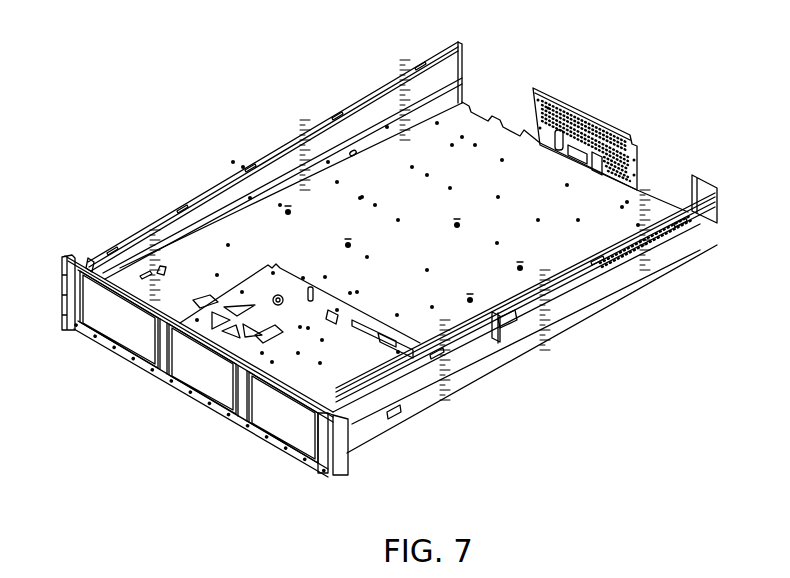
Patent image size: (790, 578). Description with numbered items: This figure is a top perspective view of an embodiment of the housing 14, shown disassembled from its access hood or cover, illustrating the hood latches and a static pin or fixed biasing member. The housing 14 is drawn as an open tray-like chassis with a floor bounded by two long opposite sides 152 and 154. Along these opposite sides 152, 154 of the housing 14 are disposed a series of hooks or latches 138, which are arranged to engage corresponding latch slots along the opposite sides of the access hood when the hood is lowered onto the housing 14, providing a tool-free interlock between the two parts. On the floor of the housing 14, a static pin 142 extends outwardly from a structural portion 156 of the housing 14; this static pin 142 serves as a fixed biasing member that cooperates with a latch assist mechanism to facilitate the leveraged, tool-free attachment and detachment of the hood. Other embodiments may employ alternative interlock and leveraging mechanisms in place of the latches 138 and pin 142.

The housing 14 is at (613, 95).
The hooks or latches 138 is at (112, 250).
The static pin 142 is at (317, 292).
The side of the housing 152 is at (273, 163).
The side of the housing 154 is at (563, 295).
The structural portion of the housing 156 is at (372, 322).